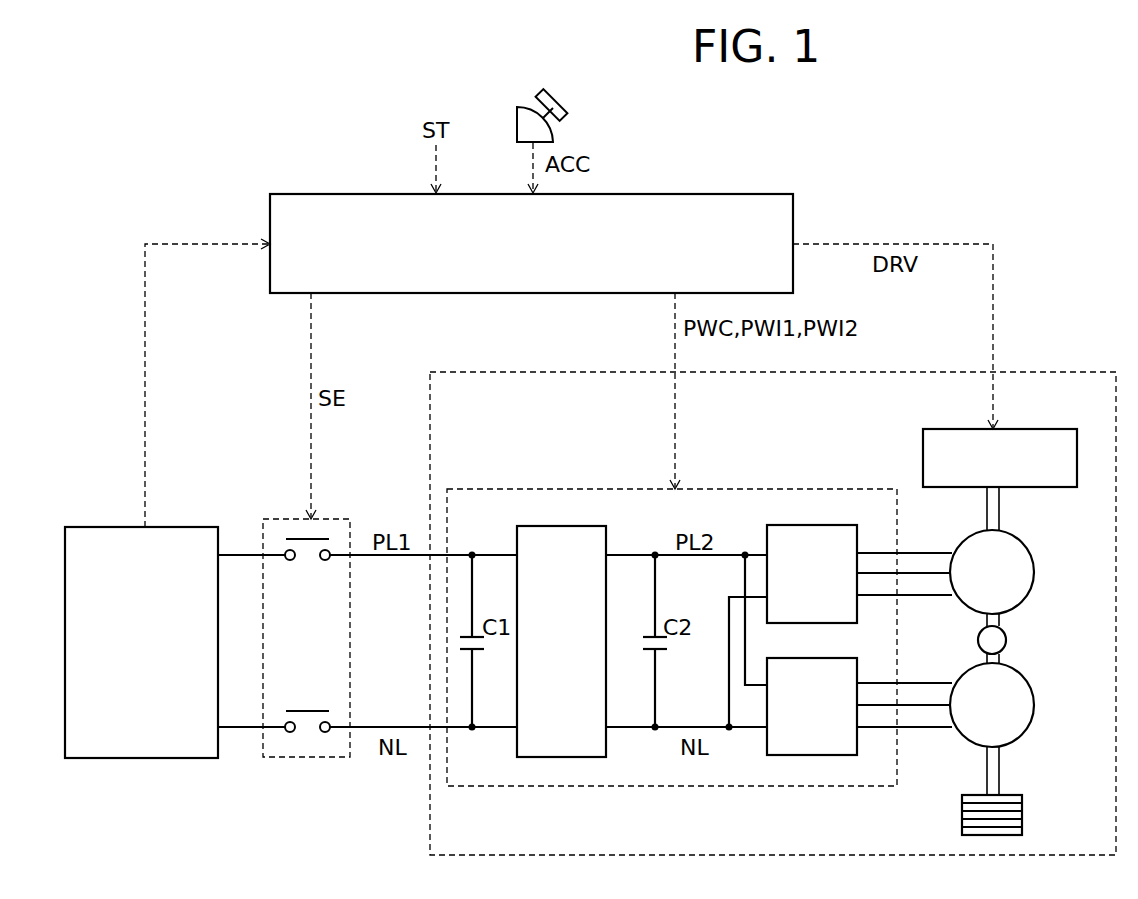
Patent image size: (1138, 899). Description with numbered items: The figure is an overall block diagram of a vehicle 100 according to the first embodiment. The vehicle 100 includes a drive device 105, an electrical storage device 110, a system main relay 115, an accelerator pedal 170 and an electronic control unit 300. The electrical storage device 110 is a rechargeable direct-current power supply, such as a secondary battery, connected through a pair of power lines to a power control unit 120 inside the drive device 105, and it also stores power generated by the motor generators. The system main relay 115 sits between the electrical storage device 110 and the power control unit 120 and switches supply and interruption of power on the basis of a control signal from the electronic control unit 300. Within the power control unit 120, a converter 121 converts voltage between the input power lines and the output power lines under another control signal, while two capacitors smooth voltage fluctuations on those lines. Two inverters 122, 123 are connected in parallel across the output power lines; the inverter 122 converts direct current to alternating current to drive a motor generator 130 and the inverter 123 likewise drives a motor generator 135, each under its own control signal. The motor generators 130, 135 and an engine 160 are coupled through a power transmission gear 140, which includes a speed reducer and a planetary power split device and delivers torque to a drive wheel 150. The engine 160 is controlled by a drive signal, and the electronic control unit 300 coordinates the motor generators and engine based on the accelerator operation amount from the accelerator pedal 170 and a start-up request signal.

The vehicle 100 is at (1070, 151).
The drive device 105 is at (1070, 372).
The electrical storage device 110 is at (178, 527).
The system main relay 115 is at (330, 519).
The power control unit 120 is at (826, 489).
The converter 121 is at (565, 526).
The inverter 122 is at (814, 525).
The inverter 123 is at (814, 658).
The motor generator 130 is at (1036, 572).
The motor generator 135 is at (1036, 705).
The power transmission gear 140 is at (1007, 640).
The drive wheel 150 is at (1022, 815).
The engine 160 is at (1025, 429).
The accelerator pedal 170 is at (566, 103).
The electronic control unit 300 is at (722, 196).